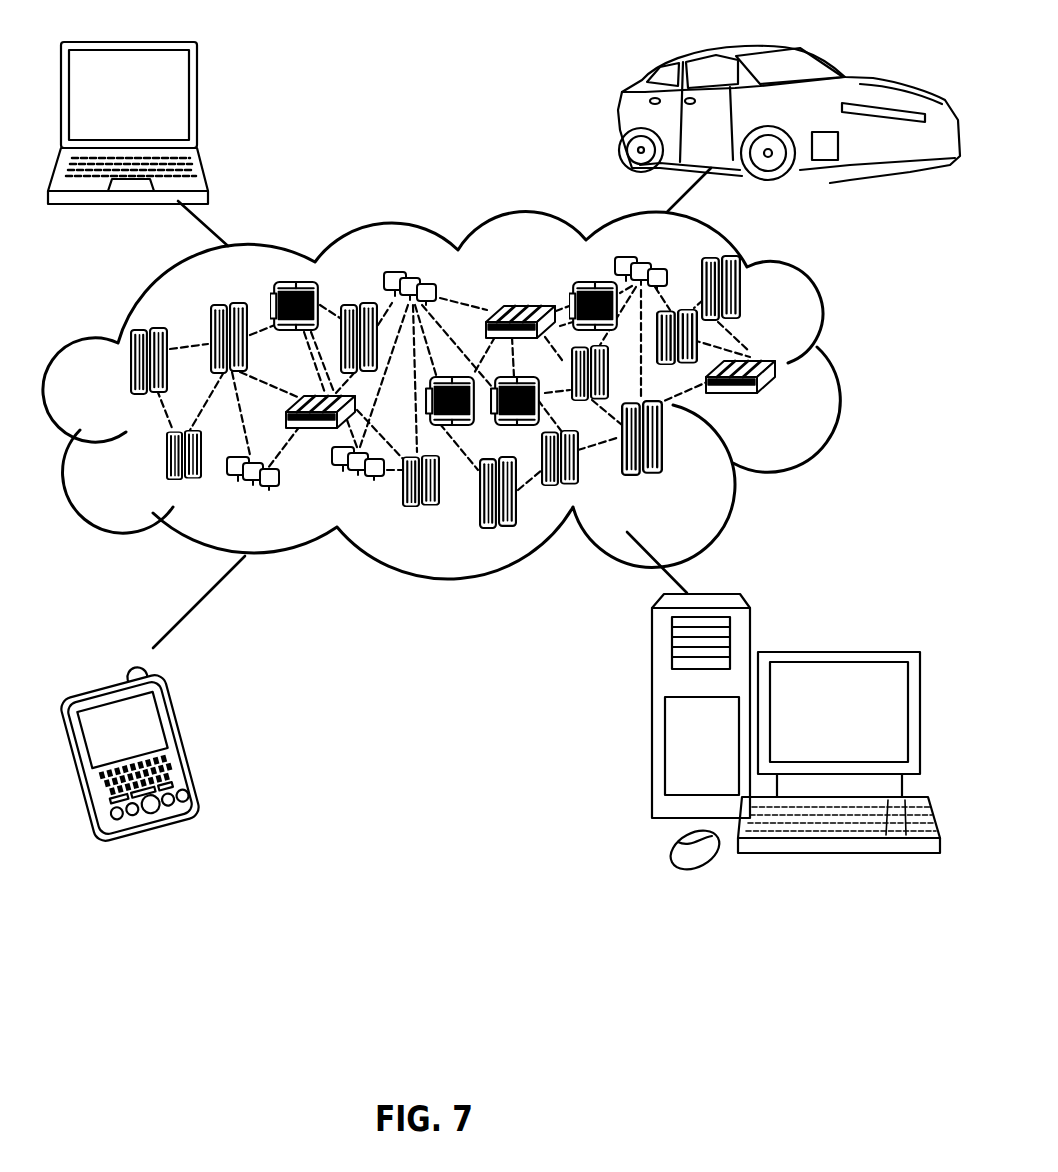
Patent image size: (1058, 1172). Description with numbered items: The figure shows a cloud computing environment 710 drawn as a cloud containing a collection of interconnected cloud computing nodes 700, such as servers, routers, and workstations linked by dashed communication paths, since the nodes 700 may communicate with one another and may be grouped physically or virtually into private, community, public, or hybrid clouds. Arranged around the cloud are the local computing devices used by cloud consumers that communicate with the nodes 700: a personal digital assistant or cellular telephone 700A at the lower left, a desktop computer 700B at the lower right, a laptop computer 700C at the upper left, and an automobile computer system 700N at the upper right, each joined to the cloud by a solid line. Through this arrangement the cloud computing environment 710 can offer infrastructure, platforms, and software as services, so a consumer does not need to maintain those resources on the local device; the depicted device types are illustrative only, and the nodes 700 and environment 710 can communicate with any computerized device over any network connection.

The cloud computing nodes 700 is at (812, 411).
The cloud computing environment 710 is at (838, 367).
The personal digital assistant (PDA) or cellular telephone 700A is at (187, 740).
The desktop computer 700B is at (836, 648).
The laptop computer 700C is at (197, 101).
The automobile computer system 700N is at (623, 118).